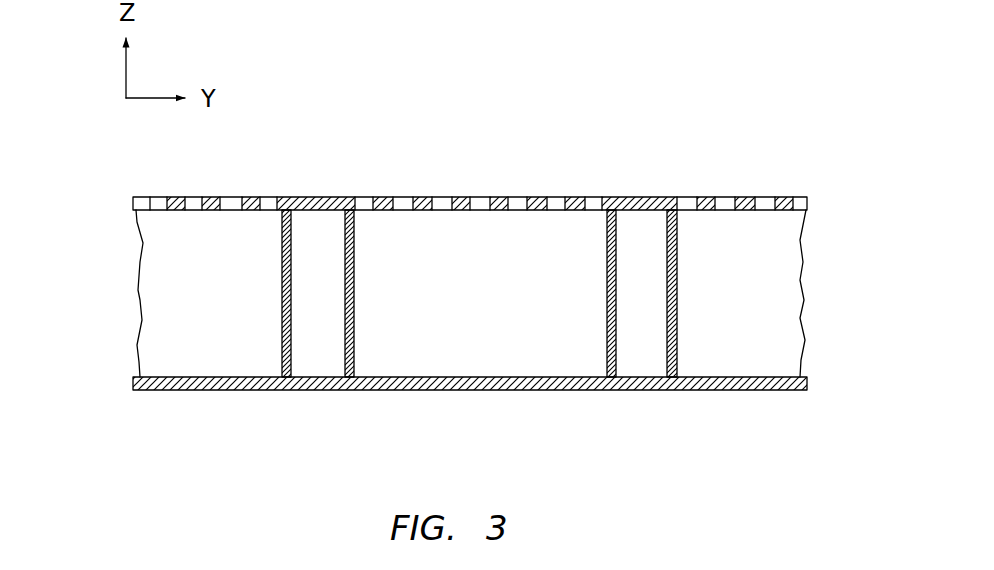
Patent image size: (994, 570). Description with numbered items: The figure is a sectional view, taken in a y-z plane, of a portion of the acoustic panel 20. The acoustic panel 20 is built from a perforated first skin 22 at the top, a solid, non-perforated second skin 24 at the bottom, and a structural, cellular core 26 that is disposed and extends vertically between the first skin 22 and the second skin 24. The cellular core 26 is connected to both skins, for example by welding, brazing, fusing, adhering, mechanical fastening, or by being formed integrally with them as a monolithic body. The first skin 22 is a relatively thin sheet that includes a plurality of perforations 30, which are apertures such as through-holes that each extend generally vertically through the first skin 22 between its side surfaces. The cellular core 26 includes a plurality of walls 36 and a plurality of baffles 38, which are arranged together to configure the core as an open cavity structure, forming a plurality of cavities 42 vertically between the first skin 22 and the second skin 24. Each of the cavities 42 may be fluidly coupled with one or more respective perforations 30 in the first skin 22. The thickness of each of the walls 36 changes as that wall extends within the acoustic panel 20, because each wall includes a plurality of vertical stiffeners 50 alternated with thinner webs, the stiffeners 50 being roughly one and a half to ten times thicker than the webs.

The acoustic panel 20 is at (762, 105).
The first skin 22 is at (143, 197).
The second skin 24 is at (135, 390).
The cellular core 26 is at (134, 301).
The perforations 30 is at (272, 197).
The walls 36 is at (359, 329).
The baffles 38 is at (170, 268).
The cavities 42 is at (232, 296).
The vertical stiffeners 50 is at (281, 345).